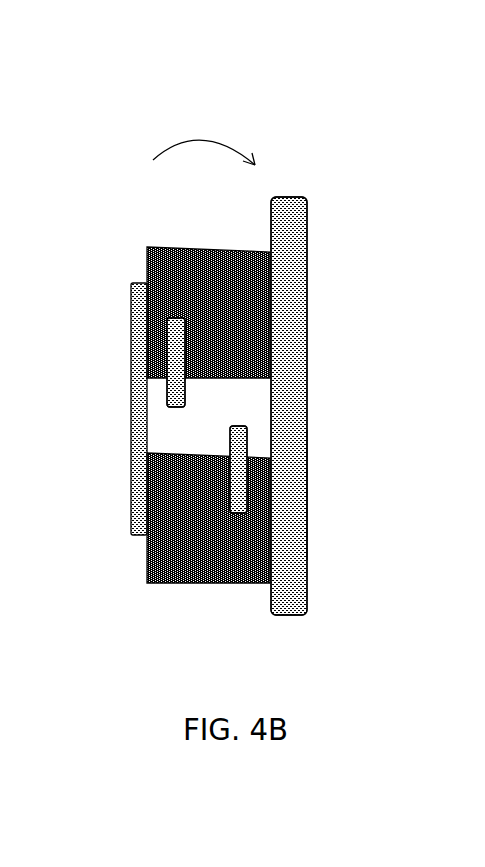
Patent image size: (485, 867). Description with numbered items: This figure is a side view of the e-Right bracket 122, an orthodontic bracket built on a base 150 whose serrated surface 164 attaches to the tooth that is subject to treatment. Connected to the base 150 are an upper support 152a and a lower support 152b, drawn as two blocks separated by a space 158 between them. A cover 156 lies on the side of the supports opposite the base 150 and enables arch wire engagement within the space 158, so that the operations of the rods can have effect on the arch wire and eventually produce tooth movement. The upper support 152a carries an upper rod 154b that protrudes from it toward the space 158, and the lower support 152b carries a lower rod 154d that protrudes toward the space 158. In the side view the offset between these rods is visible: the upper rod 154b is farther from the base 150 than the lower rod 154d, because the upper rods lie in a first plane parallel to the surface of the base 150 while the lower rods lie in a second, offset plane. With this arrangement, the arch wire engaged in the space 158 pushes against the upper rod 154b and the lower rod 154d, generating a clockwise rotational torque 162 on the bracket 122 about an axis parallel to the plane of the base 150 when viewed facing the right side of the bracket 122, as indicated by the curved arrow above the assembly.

The e-Right bracket 122 is at (246, 329).
The base 150 is at (307, 257).
The upper support 152a is at (147, 262).
The lower support 152b is at (147, 562).
The upper rod 154b is at (175, 352).
The lower rod 154d is at (240, 445).
The cover 156 is at (132, 458).
The space 158 is at (240, 409).
The clockwise rotational torque 162 is at (228, 140).
The serrated surface 164 is at (307, 492).